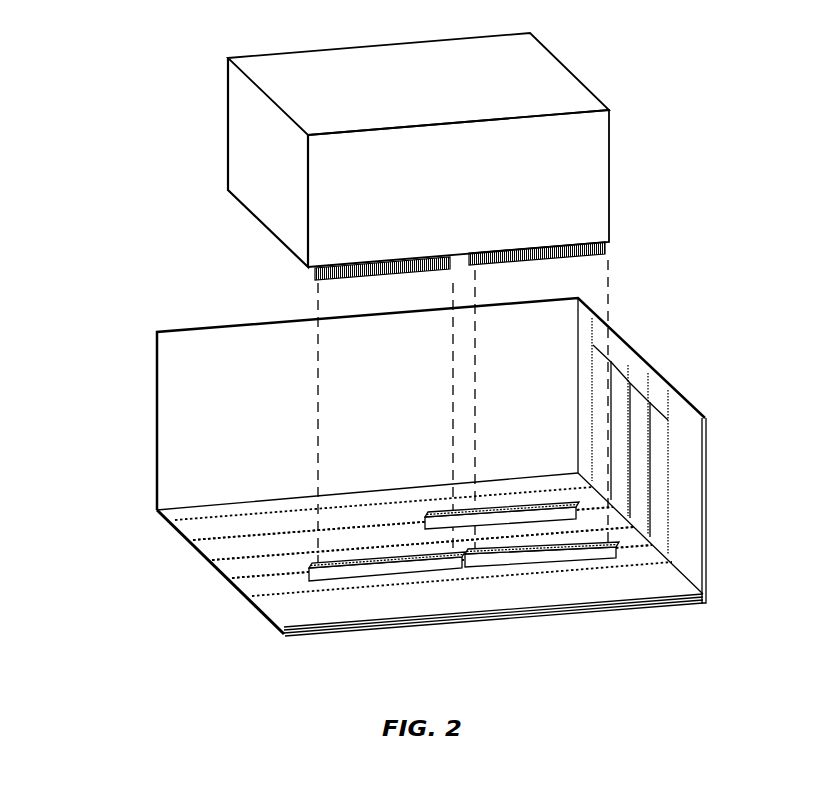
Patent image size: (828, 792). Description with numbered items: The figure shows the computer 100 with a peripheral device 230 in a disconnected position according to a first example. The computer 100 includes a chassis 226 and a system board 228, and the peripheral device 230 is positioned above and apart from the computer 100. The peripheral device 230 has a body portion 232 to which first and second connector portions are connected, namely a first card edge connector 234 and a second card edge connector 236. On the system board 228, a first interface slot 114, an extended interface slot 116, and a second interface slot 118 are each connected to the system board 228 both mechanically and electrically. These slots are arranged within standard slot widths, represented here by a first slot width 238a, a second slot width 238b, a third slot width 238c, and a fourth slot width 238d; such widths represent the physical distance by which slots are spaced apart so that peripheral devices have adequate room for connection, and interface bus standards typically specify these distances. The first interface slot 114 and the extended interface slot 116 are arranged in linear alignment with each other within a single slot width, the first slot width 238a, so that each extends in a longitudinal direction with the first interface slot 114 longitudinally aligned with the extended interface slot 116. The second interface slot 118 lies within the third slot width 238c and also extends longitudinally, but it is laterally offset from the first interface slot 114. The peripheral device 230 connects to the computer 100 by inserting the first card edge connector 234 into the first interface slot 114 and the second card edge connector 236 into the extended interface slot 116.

The computer 100 is at (103, 280).
The first interface slot 114 is at (584, 569).
The extended interface slot 116 is at (370, 583).
The second interface slot 118 is at (533, 506).
The chassis 226 is at (208, 333).
The system board 228 is at (278, 621).
The peripheral device 230 is at (200, 55).
The body portion 232 is at (609, 175).
The first card edge connector 234 is at (502, 267).
The second card edge connector 236 is at (402, 279).
The first slot width 238a is at (256, 590).
The second slot width 238b is at (235, 570).
The third slot width 238c is at (216, 552).
The fourth slot width 238d is at (197, 531).